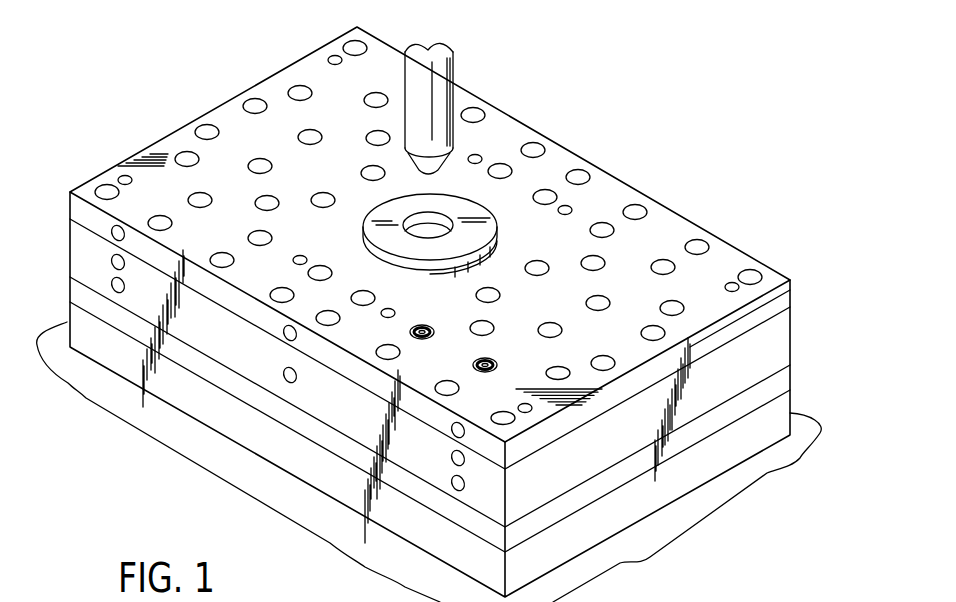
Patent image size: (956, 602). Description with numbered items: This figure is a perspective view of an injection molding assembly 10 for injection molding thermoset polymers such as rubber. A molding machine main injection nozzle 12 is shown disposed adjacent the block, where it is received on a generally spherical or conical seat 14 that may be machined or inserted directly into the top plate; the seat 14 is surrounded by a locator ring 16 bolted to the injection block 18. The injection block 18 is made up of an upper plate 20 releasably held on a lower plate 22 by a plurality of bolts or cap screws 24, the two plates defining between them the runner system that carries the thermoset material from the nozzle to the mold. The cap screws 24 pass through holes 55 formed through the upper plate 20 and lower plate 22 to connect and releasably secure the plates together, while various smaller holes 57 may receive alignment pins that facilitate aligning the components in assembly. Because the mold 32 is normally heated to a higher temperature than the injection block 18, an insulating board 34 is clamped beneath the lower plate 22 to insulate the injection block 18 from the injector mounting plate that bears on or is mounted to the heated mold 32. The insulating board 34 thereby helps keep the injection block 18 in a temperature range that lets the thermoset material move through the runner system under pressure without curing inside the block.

The injection molding assembly 10 is at (699, 100).
The molding machine main injection nozzle 12 is at (447, 67).
The seat 14 is at (450, 215).
The locator ring 16 is at (497, 237).
The injection block 18 is at (800, 305).
The upper plate 20 is at (790, 283).
The lower plate 22 is at (784, 344).
The cap screws 24 is at (483, 358).
The mold 32 is at (768, 472).
The insulating board 34 is at (790, 381).
The holes 55 is at (562, 375).
The smaller holes 57 is at (731, 294).